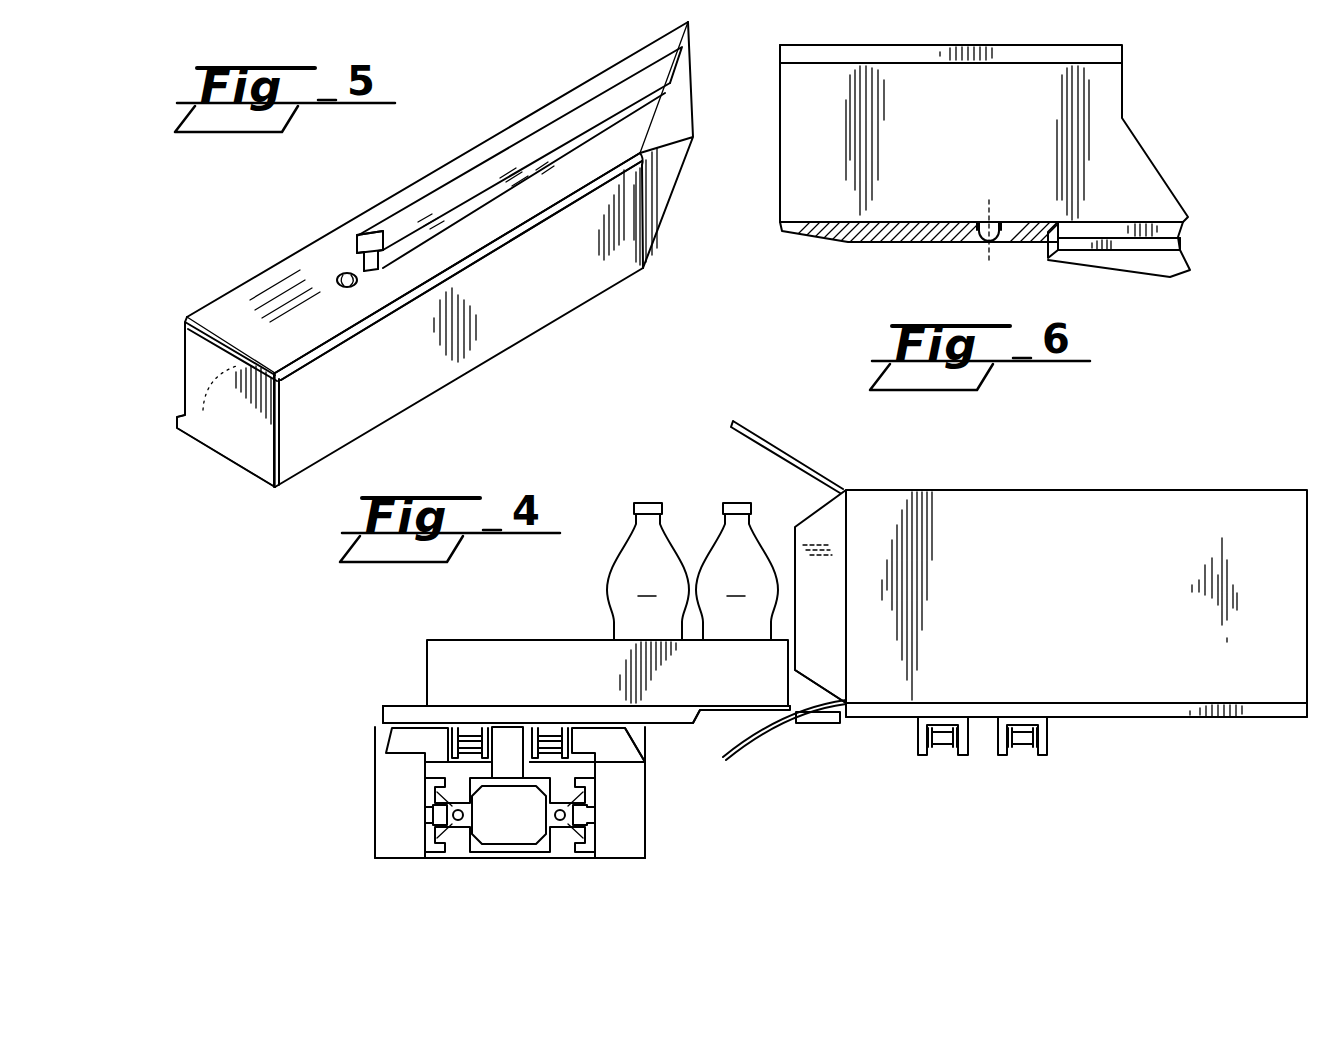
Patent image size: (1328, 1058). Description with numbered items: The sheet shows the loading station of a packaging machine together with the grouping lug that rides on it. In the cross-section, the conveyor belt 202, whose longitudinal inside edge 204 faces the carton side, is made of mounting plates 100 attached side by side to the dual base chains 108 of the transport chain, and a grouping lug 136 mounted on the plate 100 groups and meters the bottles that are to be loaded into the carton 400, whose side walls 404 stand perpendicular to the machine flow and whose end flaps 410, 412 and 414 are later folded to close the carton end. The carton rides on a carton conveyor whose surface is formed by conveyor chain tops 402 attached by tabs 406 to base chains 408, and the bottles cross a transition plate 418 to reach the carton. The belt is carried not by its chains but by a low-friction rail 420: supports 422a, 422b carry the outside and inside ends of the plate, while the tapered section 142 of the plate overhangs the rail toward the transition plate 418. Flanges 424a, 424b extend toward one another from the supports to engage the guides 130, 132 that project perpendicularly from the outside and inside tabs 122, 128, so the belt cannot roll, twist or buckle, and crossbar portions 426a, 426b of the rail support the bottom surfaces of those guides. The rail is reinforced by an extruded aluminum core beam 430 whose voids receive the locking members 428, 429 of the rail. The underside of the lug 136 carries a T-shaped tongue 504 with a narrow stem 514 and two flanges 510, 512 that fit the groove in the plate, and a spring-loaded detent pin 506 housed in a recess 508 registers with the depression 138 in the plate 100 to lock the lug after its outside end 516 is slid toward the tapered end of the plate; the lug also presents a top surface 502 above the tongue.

In FIG. 6, the mounting plate 100 is at (845, 247).
In FIG. 4, the mounting plate 100 is at (594, 710).
In FIG. 4, the base chain 108 is at (462, 733).
In FIG. 4, the outside tab 122 is at (450, 722).
In FIG. 4, the inside tab 128 is at (543, 735).
In FIG. 4, the guide 130 is at (645, 758).
In FIG. 4, the guide 132 is at (423, 757).
In FIG. 5, the grouping lug 136 is at (150, 338).
In FIG. 6, the grouping lug 136 is at (950, 148).
In FIG. 4, the grouping lug 136 is at (710, 681).
In FIG. 6, the aperture or depression 138 is at (982, 245).
In FIG. 4, the tapered section 142 is at (733, 712).
In FIG. 4, the conveyor belt 202 is at (288, 648).
In FIG. 4, the longitudinal inside edge 204 is at (800, 696).
In FIG. 4, the carton 400 is at (978, 460).
In FIG. 4, the conveyor chain top 402 is at (1140, 722).
In FIG. 4, the side wall 404 is at (1043, 618).
In FIG. 4, the tab 406 is at (917, 735).
In FIG. 4, the base chain 408 is at (1028, 747).
In FIG. 4, the end flap 410 is at (772, 449).
In FIG. 4, the end flap 412 is at (753, 737).
In FIG. 4, the end flap 414 is at (803, 612).
In FIG. 4, the transition plate 418 is at (823, 728).
In FIG. 4, the rail 420 is at (306, 805).
In FIG. 4, the support 422a is at (387, 800).
In FIG. 4, the support 422b is at (622, 812).
In FIG. 4, the flange 424a is at (397, 752).
In FIG. 4, the flange 424b is at (578, 752).
In FIG. 4, the crossbar portion 426a is at (457, 775).
In FIG. 4, the crossbar portion 426b is at (562, 770).
In FIG. 4, the locking member 428 is at (510, 815).
In FIG. 4, the locking member 429 is at (433, 815).
In FIG. 4, the core beam 430 is at (645, 848).
In FIG. 5, the top surface 502 is at (290, 346).
In FIG. 5, the tongue 504 is at (532, 152).
In FIG. 5, the detent pin or ball 506 is at (350, 248).
In FIG. 6, the detent pin or ball 506 is at (1000, 243).
In FIG. 5, the recess 508 is at (333, 283).
In FIG. 5, the flange 510 is at (338, 273).
In FIG. 6, the flange 510 is at (1130, 244).
In FIG. 5, the flange 512 is at (450, 307).
In FIG. 5, the stem 514 is at (365, 262).
In FIG. 6, the stem 514 is at (1165, 228).
In FIG. 5, the outside end 516 is at (210, 443).